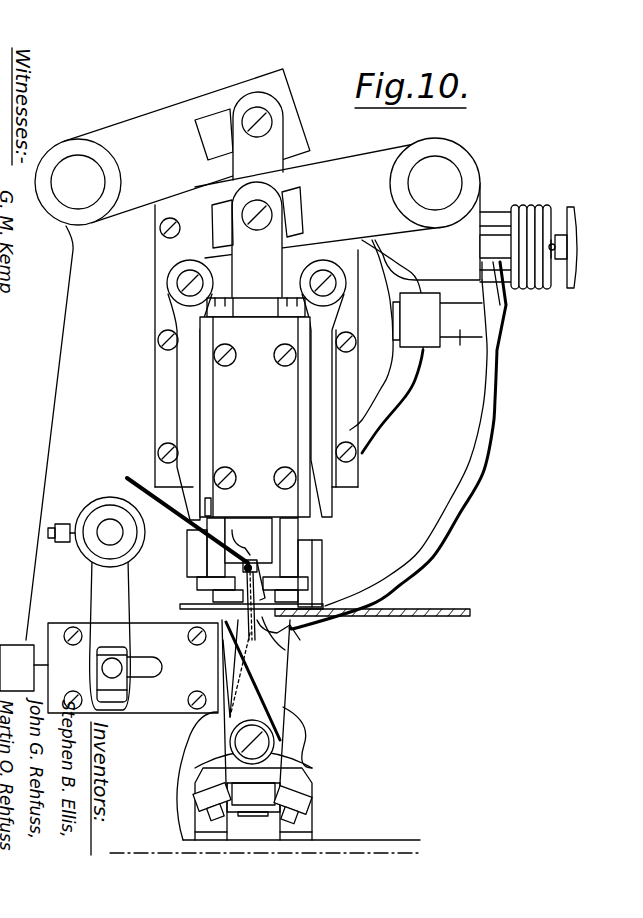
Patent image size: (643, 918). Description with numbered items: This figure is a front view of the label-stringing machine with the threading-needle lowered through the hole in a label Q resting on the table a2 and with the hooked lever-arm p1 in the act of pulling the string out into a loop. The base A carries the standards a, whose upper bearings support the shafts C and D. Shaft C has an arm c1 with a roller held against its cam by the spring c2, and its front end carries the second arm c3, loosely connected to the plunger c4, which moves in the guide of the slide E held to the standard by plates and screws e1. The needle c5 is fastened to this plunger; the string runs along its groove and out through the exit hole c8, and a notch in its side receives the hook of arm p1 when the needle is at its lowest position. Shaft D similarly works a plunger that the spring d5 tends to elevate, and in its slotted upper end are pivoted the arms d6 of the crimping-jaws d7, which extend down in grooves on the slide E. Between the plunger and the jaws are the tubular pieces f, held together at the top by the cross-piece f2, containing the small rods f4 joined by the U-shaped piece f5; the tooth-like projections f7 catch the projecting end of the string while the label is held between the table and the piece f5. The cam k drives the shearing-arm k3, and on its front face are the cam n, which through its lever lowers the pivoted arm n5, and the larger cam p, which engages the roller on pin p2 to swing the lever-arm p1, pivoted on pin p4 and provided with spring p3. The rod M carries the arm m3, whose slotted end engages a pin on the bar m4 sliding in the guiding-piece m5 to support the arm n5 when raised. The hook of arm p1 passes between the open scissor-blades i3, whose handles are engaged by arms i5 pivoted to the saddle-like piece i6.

The base A is at (265, 835).
The shaft D is at (78, 182).
The shaft C is at (435, 183).
The standards a is at (109, 422).
The table a2 is at (382, 616).
The arm c1 is at (345, 368).
The spring c2 is at (255, 417).
The second arm c3 is at (337, 210).
The plunger c4 is at (256, 249).
The needle c5 is at (255, 555).
The exit hole c8 is at (248, 540).
The spring d5 is at (186, 146).
The arms of the crimping-jaws d6 is at (205, 230).
The crimping-jaws d7 is at (256, 390).
The screws e1 is at (168, 340).
The slide E is at (305, 448).
The tubular pieces f is at (292, 556).
The top cross-piece f2 is at (205, 580).
The small rods f4 is at (213, 594).
The U-shaped piece f5 is at (307, 575).
The tooth-like projections f7 is at (230, 668).
The scissor-blades i3 is at (256, 701).
The arms i5 is at (200, 797).
The saddle-like piece i6 is at (296, 733).
The cam k is at (413, 380).
The shearing-arm k3 is at (187, 520).
The rod M is at (108, 527).
The arm m3 is at (110, 635).
The bar m4 is at (24, 668).
The guiding-piece m5 is at (133, 668).
The cam n is at (426, 320).
The pivoted arm n5 is at (285, 650).
The cam p is at (373, 335).
The lever-arm p1 is at (478, 494).
The pin p2 is at (457, 347).
The spring p3 is at (537, 213).
The pin p4 is at (575, 268).
The label Q is at (313, 603).